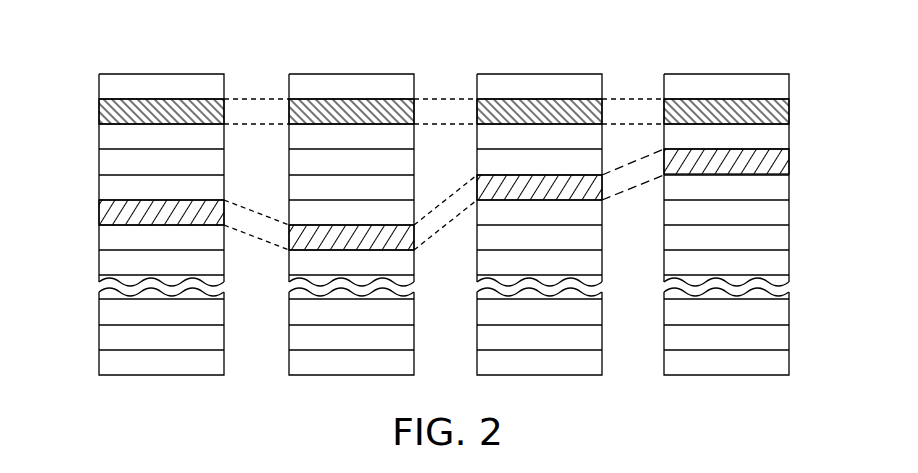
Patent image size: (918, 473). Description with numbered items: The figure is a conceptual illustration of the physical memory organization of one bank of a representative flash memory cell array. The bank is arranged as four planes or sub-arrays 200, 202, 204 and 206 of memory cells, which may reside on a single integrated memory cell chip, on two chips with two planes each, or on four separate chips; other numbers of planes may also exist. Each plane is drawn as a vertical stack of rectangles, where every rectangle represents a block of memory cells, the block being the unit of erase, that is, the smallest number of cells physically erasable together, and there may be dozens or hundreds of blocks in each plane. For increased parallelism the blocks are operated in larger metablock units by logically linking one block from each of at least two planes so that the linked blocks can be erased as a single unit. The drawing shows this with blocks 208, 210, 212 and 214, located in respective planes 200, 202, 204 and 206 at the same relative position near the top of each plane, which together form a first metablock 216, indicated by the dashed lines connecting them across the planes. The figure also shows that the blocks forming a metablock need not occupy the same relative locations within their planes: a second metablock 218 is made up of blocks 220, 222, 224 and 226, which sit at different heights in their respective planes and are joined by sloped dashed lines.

The plane 200 is at (169, 61).
The plane 202 is at (362, 60).
The plane 204 is at (531, 57).
The plane 206 is at (774, 65).
The block 208 is at (140, 113).
The block 210 is at (330, 113).
The block 212 is at (520, 115).
The block 214 is at (755, 112).
The first metablock 216 is at (628, 84).
The second metablock 218 is at (641, 148).
The block 220 is at (138, 212).
The block 222 is at (325, 237).
The block 224 is at (522, 185).
The block 226 is at (755, 158).